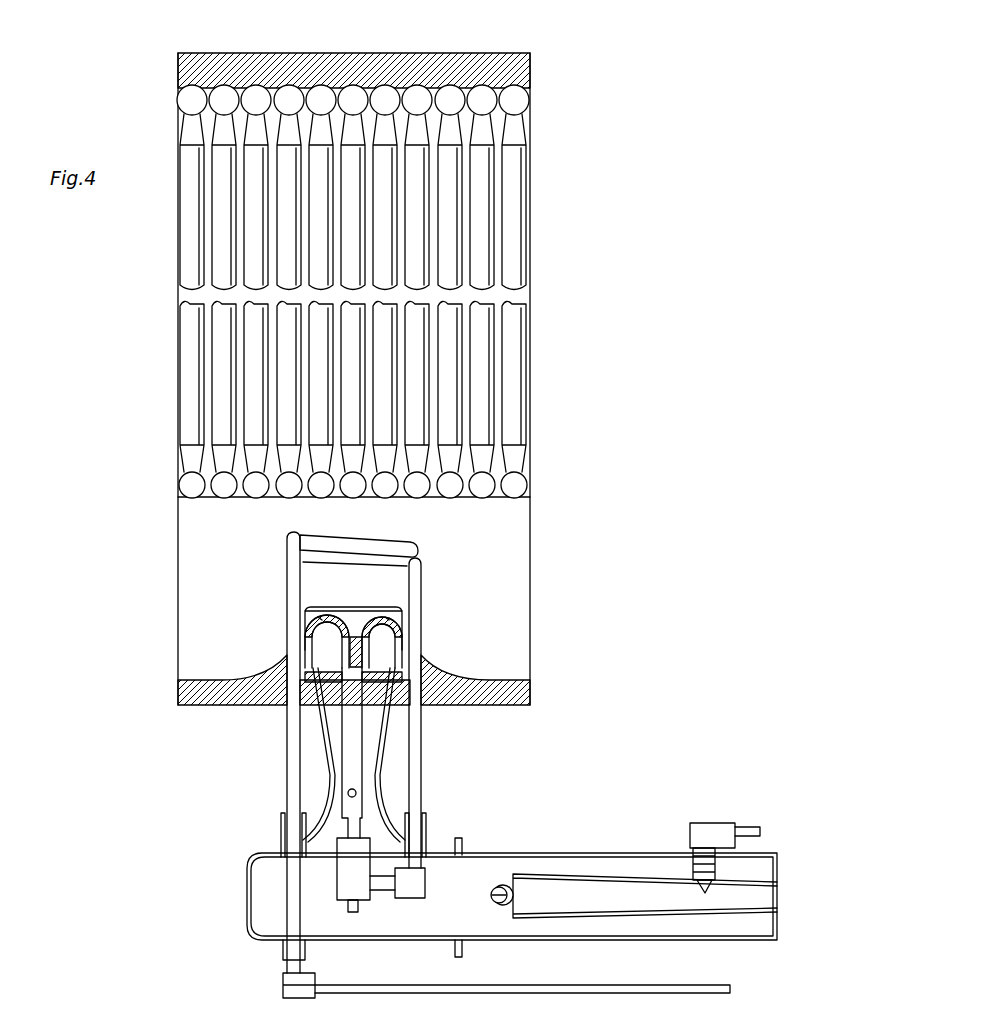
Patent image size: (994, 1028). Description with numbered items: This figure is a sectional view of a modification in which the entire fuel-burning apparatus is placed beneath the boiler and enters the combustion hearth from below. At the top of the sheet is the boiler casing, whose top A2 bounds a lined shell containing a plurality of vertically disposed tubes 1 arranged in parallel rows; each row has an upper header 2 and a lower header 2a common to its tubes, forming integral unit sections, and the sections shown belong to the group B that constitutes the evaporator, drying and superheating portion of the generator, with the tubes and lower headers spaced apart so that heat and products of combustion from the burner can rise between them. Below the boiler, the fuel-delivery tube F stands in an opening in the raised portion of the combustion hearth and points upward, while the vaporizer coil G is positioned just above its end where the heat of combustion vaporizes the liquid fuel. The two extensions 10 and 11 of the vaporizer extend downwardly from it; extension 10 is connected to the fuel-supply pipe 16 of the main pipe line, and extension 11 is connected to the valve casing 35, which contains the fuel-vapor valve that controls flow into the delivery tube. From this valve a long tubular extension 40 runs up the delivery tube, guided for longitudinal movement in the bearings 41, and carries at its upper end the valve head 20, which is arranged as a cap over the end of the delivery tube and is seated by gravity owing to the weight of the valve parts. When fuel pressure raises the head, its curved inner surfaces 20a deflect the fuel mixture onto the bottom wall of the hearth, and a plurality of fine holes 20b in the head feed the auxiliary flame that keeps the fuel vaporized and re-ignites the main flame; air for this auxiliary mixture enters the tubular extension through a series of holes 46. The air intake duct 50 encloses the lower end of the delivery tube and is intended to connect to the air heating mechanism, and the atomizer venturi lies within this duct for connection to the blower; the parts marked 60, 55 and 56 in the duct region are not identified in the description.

The top of the casing A2 is at (467, 49).
The upper header 2 is at (226, 100).
The vertically disposed tubes 1 is at (480, 232).
The evaporator group of tube sections B is at (272, 385).
The lower header 2a is at (225, 490).
The vaporizer coil G is at (372, 550).
The vaporizer extension 10 is at (290, 918).
The vaporizer extension 11 is at (425, 835).
The valve head 20 is at (352, 605).
The curved inner surfaces of the valve head 20a is at (305, 648).
The fine holes 20b is at (375, 606).
The bearings 41 is at (313, 712).
The fuel-delivery tube F is at (322, 772).
The tubular extension of the valve member 40 is at (362, 732).
The air holes 46 is at (356, 793).
The valve casing 35 is at (338, 884).
The fuel pipe 16 is at (500, 986).
The air intake duct 50 is at (605, 925).
The knob 60 is at (500, 884).
The fitting 55 is at (660, 892).
The nozzle 56 is at (710, 890).